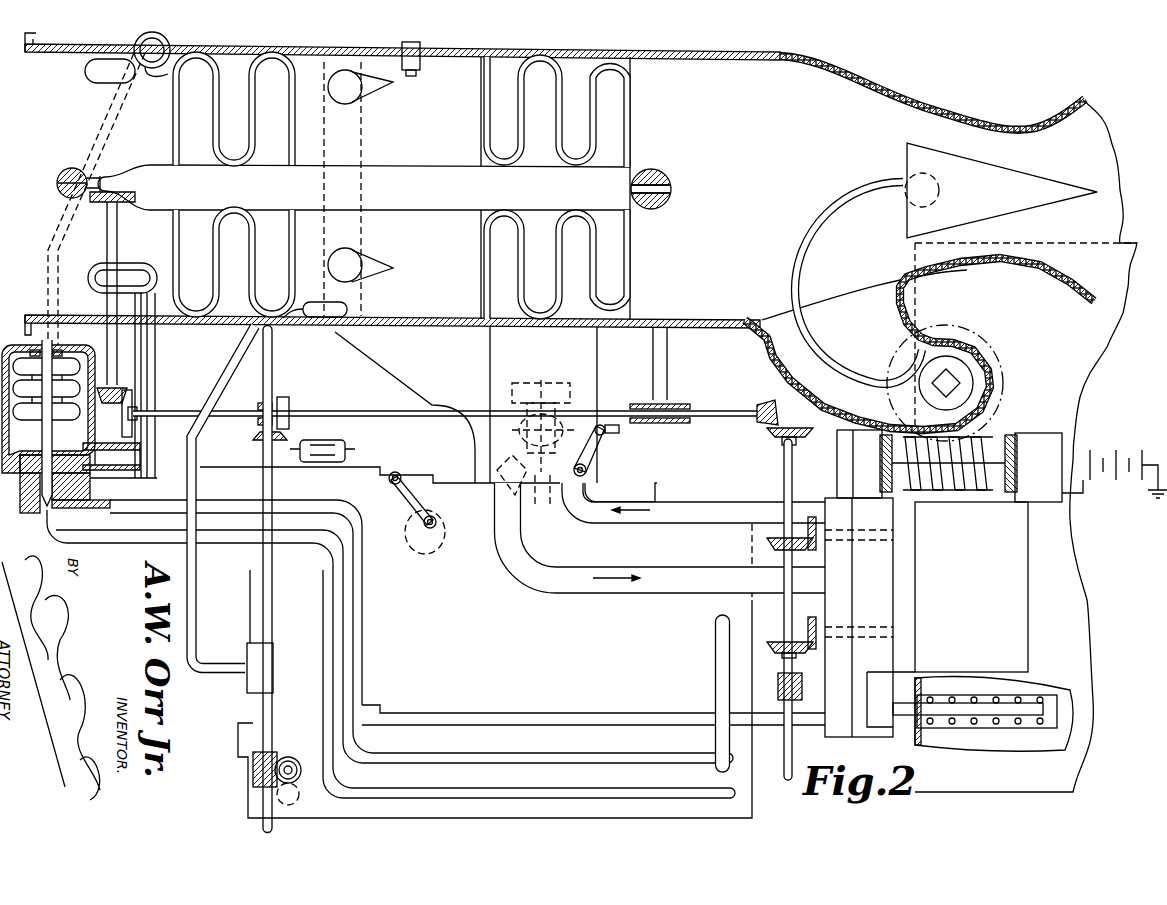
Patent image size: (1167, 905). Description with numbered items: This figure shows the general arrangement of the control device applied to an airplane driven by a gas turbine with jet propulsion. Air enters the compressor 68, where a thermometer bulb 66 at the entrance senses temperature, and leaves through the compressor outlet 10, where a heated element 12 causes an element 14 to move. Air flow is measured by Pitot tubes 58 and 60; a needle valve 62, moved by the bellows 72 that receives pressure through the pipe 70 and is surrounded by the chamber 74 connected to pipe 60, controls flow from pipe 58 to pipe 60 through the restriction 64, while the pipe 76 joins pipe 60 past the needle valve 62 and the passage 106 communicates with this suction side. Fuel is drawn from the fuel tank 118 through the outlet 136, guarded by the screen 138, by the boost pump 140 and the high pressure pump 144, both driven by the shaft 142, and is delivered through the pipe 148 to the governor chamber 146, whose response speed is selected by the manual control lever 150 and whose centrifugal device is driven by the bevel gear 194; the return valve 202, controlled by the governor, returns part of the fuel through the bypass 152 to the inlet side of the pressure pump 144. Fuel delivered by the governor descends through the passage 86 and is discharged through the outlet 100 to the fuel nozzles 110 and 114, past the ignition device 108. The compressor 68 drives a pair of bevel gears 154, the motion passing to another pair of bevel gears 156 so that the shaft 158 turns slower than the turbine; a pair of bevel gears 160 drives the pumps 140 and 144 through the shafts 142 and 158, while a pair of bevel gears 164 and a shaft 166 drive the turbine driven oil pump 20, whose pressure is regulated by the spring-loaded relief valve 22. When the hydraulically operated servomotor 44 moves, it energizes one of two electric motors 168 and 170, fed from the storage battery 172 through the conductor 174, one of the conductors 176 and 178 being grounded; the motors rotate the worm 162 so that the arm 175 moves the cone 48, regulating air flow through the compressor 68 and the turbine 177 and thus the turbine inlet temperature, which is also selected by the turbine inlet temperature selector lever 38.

The compressor outlet 10 is at (314, 257).
The element 12 is at (352, 309).
The element 14 is at (246, 690).
The turbine driven oil pump 20 is at (300, 796).
The relief valve 22 is at (247, 734).
The turbine inlet temperature selector lever 38 is at (412, 494).
The hydraulically operated servomotor 44 is at (322, 462).
The cone 48 is at (985, 197).
The Pitot tube 58 is at (150, 268).
The Pitot tube 60 is at (142, 266).
The needle valve 62 is at (40, 481).
The restriction 64 is at (100, 507).
The thermometer bulb 66 is at (98, 78).
The compressor 68 is at (185, 119).
The pipe 70 is at (150, 74).
The bellows 72 is at (76, 438).
The chamber 74 is at (34, 438).
The pipe 76 is at (150, 543).
The passage 86 is at (546, 495).
The pipe 100 is at (460, 445).
The passage 106 is at (715, 688).
The ignition device 108 is at (416, 76).
The fuel nozzle 110 is at (360, 270).
The fuel nozzle 114 is at (386, 92).
The fuel tank 118 is at (985, 615).
The outlet 136 is at (945, 730).
The screen 138 is at (968, 695).
The boost pump 140 is at (880, 658).
The shaft 142 is at (772, 470).
The high pressure pump 144 is at (878, 583).
The governor chamber 146 is at (594, 348).
The pipe 148 is at (686, 519).
The manual control lever 150 is at (605, 444).
The bypass 152 is at (674, 588).
The bevel gears 154 is at (112, 180).
The bevel gears 156 is at (111, 429).
The shaft 158 is at (370, 417).
The bevel gears 160 is at (779, 430).
The worm 162 is at (962, 490).
The bevel gears 164 is at (288, 398).
The shaft 166 is at (262, 484).
The electric motor 168 is at (836, 461).
The electric motor 170 is at (1043, 432).
The storage battery 172 is at (1116, 450).
The conductor 174 is at (1095, 493).
The arm 175 is at (815, 252).
The conductor 176 is at (855, 483).
The turbine 177 is at (548, 145).
The conductor 178 is at (1028, 540).
The bevel gear 194 is at (580, 405).
The return valve 202 is at (500, 490).